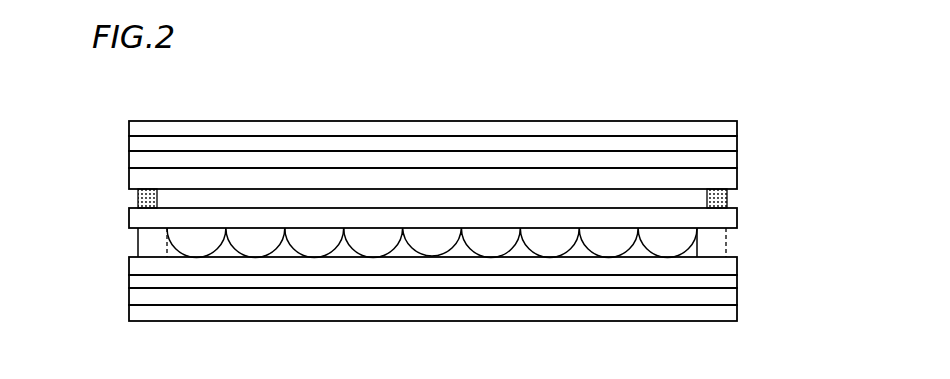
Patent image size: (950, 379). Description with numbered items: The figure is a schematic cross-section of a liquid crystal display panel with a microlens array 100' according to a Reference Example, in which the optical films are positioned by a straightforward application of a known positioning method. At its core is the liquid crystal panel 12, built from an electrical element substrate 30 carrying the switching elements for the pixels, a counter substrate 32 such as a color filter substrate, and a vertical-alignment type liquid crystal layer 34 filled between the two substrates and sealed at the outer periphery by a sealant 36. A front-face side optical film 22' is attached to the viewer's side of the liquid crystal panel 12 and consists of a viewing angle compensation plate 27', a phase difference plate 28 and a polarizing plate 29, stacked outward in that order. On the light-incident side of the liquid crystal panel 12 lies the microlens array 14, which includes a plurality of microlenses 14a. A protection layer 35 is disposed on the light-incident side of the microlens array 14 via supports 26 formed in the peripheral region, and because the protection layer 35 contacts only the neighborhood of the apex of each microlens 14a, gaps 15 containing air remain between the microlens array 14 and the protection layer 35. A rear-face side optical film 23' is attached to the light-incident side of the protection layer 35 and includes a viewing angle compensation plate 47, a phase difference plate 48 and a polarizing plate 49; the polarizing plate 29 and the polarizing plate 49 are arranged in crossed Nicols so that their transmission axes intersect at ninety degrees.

The liquid crystal display panel with a microlens array 100' is at (717, 66).
The front-face side optical film 22' is at (488, 132).
The polarizing plate 29 is at (740, 127).
The phase difference plate 28 is at (738, 145).
The viewing angle compensation plate 27' is at (468, 157).
The liquid crystal panel 12 is at (382, 203).
The counter substrate 32 is at (130, 177).
The liquid crystal layer 34 is at (160, 196).
The electrical element substrate 30 is at (130, 222).
The sealant 36 is at (727, 198).
The supports 26 is at (727, 244).
The microlens array 14 is at (432, 292).
The microlenses 14a is at (375, 247).
The gaps 15 is at (287, 250).
The rear-face side optical film 23' is at (488, 288).
The protection layer 35 is at (728, 265).
The viewing angle compensation plate 47 is at (738, 281).
The phase difference plate 48 is at (738, 298).
The polarizing plate 49 is at (467, 320).